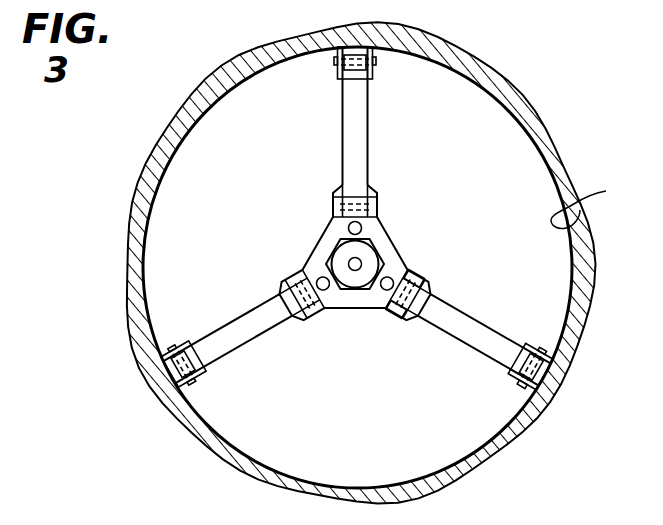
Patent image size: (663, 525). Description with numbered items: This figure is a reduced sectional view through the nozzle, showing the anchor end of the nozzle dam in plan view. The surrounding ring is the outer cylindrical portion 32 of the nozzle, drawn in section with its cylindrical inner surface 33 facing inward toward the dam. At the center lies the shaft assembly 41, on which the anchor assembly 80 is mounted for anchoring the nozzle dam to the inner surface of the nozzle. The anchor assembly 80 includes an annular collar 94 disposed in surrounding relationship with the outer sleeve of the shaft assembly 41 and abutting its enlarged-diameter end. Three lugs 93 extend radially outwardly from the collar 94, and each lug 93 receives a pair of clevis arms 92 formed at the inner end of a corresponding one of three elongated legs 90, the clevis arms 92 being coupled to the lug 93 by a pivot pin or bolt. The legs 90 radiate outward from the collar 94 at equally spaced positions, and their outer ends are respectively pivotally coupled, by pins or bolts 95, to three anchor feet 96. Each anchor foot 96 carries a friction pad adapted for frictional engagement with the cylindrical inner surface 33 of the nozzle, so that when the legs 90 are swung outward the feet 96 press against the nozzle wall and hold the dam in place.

The outer cylindrical portion 32 is at (548, 140).
The cylindrical inner surface 33 is at (592, 200).
The shaft assembly 41 is at (367, 262).
The anchor assembly 80 is at (272, 217).
The legs 90 is at (369, 131).
The clevis arms 92 is at (416, 281).
The lugs 93 is at (405, 300).
The annular collar 94 is at (353, 302).
The pins or bolts 95 is at (512, 383).
The anchor feet 96 is at (337, 47).